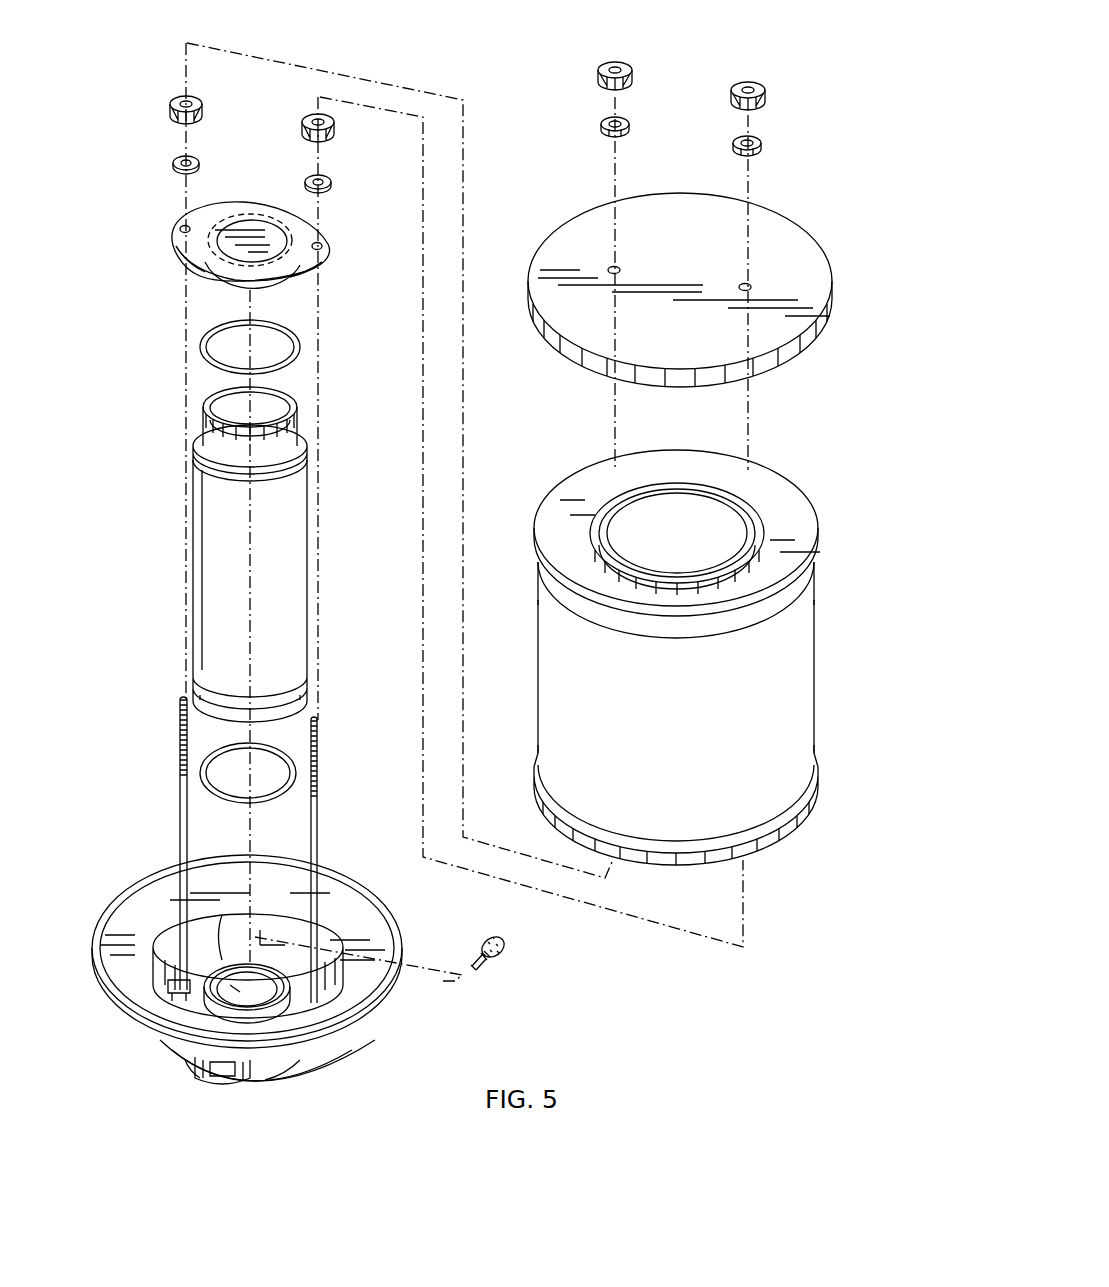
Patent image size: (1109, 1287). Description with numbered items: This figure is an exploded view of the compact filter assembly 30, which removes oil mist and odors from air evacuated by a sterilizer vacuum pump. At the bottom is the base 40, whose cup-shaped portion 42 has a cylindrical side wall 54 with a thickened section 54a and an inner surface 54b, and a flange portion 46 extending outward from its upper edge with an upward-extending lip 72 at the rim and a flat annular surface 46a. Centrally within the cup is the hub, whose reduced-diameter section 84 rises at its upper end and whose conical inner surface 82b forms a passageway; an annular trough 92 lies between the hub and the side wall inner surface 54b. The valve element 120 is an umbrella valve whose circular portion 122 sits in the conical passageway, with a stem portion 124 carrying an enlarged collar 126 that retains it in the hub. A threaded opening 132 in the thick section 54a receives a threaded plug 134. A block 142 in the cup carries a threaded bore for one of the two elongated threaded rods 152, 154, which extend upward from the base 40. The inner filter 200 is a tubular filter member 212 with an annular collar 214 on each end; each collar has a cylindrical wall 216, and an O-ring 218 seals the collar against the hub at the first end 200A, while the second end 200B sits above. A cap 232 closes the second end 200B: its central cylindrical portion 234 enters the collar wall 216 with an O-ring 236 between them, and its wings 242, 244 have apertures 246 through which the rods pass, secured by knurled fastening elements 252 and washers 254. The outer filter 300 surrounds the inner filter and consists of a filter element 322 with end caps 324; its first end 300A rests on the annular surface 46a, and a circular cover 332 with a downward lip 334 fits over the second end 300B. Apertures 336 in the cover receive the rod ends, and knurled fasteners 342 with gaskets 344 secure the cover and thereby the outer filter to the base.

The filter assembly 30 is at (103, 83).
The base 40 is at (257, 985).
The cup-shaped portion 42 is at (300, 1062).
The flange portion 46 is at (148, 905).
The flat annular surface 46a is at (370, 948).
The cylindrical side wall 54 is at (275, 1070).
The thick section of side wall 54a is at (185, 1073).
The inner surface of side wall 54b is at (222, 920).
The collar or lip 72 is at (108, 1005).
The conical inner surface of hub 82b is at (235, 988).
The reduced-diameter section of hub 84 is at (278, 1012).
The annular channel or trough 92 is at (332, 965).
The valve element 120 is at (525, 983).
The circular portion of valve element 122 is at (505, 948).
The stem portion of valve element 124 is at (480, 968).
The collar or enlarged area of stem 126 is at (487, 960).
The threaded opening 132 is at (220, 1078).
The threaded plug 134 is at (232, 1083).
The block or support 142 is at (178, 1000).
The elongated threaded rod 152 is at (180, 817).
The elongated threaded rod 154 is at (312, 835).
The inner filter 200 is at (244, 563).
The first end of inner filter 200A is at (272, 685).
The second end of inner filter 200B is at (232, 488).
The tubular filter member 212 is at (205, 557).
The annular collar or ring 214 is at (210, 470).
The cylindrical wall of collar 216 is at (280, 455).
The O-ring 218 is at (296, 762).
The cap 232 is at (248, 266).
The cylindrical portion of cap 234 is at (235, 283).
The O-ring 236 is at (300, 348).
The wing of cap 242 is at (183, 245).
The wing of cap 244 is at (315, 260).
The aperture 246 is at (178, 230).
The knurled fastening element 252 is at (170, 112).
The washer 254 is at (173, 165).
The outer filter 300 is at (675, 686).
The first end of outer filter 300A is at (770, 810).
The second end of outer filter 300B is at (785, 615).
The filter element 322 is at (558, 683).
The end cap 324 is at (785, 500).
The cover 332 is at (694, 291).
The lip or wall of cover 334 is at (790, 350).
The aperture 336 is at (612, 267).
The knurled fastener 342 is at (600, 83).
The gasket 344 is at (603, 133).